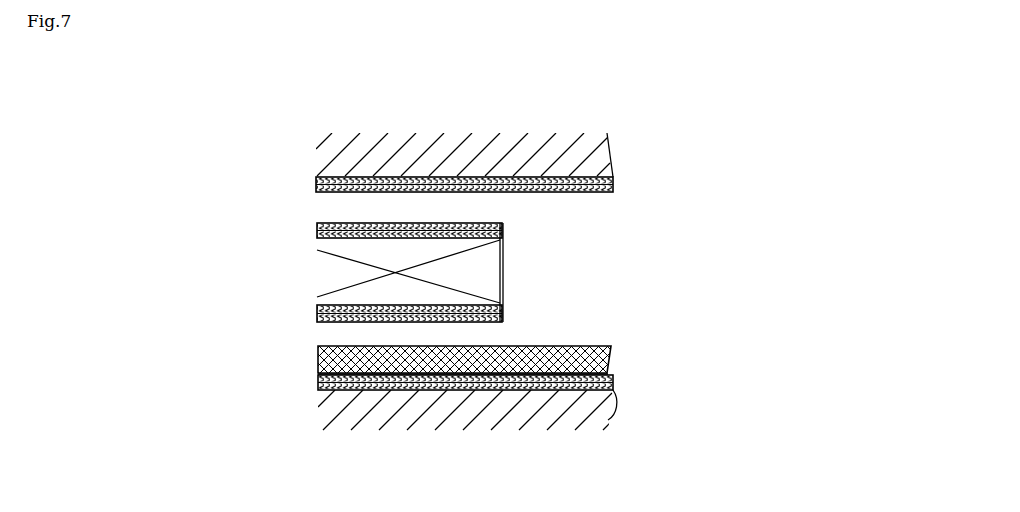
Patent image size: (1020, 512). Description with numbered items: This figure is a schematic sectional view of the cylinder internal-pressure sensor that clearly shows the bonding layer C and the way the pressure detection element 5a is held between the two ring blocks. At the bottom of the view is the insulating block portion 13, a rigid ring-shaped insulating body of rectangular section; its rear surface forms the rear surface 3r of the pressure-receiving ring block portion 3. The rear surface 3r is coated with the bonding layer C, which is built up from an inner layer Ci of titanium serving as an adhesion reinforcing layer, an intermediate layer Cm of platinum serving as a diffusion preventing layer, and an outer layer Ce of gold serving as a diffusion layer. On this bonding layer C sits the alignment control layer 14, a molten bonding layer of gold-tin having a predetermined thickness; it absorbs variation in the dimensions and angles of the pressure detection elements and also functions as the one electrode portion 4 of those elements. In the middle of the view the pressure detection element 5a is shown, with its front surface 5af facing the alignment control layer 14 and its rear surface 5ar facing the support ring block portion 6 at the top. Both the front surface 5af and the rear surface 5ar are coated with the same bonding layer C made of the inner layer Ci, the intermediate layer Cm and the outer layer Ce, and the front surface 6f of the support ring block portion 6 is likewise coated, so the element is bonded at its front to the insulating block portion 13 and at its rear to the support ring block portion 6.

The pressure-receiving ring block portion 3 is at (645, 398).
The rear surface of the pressure-receiving ring block portion 3r is at (352, 323).
The one electrode portion 4 is at (318, 313).
The pressure detection element 5a is at (373, 224).
The rear surface of the pressure detection element 5ar is at (374, 226).
The front surface of the pressure detection element 5af is at (400, 323).
The support ring block portion 6 is at (607, 152).
The front surface of the support ring block portion 6f is at (349, 190).
The insulating block portion 13 is at (612, 413).
The alignment control layer 14 is at (338, 346).
The bonding layer C is at (455, 215).
The outer layer Ce is at (613, 189).
The intermediate layer Cm is at (613, 185).
The inner layer Ci is at (613, 181).